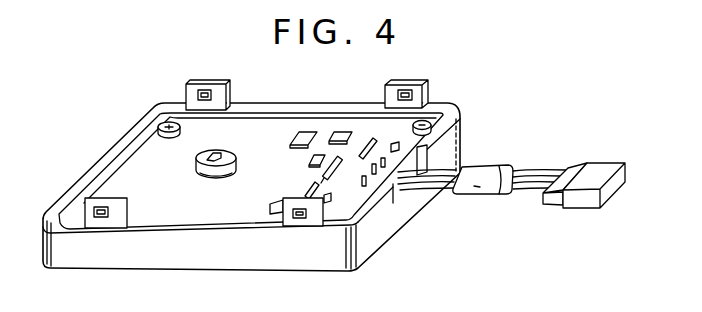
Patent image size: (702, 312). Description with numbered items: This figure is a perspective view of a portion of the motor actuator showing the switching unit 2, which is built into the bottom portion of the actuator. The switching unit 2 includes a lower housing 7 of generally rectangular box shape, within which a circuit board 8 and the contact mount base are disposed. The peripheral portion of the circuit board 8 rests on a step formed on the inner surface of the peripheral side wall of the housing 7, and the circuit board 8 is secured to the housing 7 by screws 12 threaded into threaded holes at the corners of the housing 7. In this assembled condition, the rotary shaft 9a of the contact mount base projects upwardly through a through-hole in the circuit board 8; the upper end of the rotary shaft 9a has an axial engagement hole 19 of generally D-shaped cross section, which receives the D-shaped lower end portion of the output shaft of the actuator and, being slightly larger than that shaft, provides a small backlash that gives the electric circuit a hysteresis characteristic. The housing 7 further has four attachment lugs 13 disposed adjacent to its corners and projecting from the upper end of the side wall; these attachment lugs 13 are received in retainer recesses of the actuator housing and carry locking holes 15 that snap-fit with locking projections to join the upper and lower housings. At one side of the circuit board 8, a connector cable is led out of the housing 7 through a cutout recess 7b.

The switching unit 2 is at (463, 113).
The lower housing 7 is at (137, 256).
The cutout recess 7b is at (428, 156).
The circuit board 8 is at (274, 137).
The rotary shaft 9a is at (212, 180).
The screws 12 is at (159, 129).
The attachment lugs 13 is at (186, 92).
The locking holes 15 is at (204, 90).
The engagement hole 19 is at (214, 151).